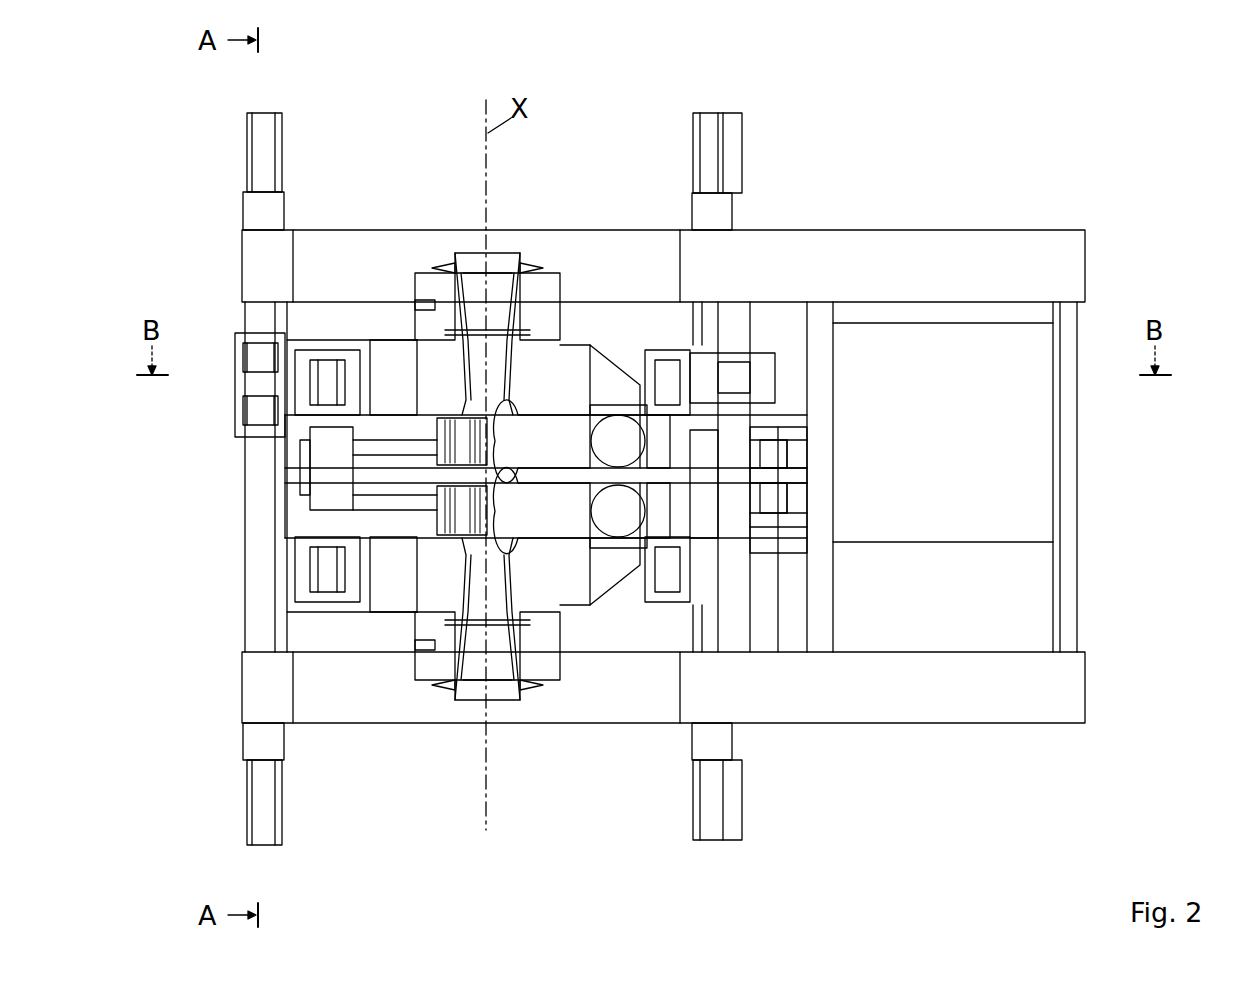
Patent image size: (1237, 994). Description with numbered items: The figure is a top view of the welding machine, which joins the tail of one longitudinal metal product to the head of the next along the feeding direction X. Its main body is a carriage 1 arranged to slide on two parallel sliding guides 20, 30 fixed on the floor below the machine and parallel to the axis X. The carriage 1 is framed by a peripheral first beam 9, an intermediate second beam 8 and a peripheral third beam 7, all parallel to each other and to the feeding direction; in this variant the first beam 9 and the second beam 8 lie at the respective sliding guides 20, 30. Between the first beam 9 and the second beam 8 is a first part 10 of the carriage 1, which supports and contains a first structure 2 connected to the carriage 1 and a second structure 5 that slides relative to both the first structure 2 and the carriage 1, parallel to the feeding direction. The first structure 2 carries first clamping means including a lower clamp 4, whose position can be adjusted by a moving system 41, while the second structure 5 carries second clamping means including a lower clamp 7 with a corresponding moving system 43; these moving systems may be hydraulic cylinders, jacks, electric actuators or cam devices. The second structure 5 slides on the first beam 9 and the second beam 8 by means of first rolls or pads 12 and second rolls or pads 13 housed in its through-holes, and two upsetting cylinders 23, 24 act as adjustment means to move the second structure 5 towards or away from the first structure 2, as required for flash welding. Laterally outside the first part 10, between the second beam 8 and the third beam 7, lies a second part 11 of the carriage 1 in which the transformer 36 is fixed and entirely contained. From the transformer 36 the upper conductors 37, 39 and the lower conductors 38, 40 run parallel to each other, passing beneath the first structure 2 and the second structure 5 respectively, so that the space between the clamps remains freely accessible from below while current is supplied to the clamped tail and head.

The carriage 1 is at (603, 765).
The first structure 2 is at (555, 530).
The lower clamp 4 is at (462, 490).
The second structure 5 is at (563, 432).
The lower clamp / third beam 7 is at (1060, 565).
The second beam 8 is at (730, 600).
The first beam 9 is at (258, 605).
The first part 10 is at (420, 218).
The second part 11 is at (1030, 215).
The first rolls or pads 12 is at (248, 368).
The second rolls or pads 13 is at (733, 380).
The sliding guide 20 is at (267, 140).
The upsetting cylinder 23 is at (654, 457).
The upsetting cylinder 24 is at (333, 495).
The sliding guide 30 is at (718, 133).
The transformer 36 is at (1007, 395).
The upper conductor 37 is at (795, 540).
The lower conductor 38 is at (400, 497).
The upper conductor 39 is at (777, 457).
The lower conductor 40 is at (387, 425).
The moving system 41 is at (612, 516).
The moving system 43 is at (618, 440).